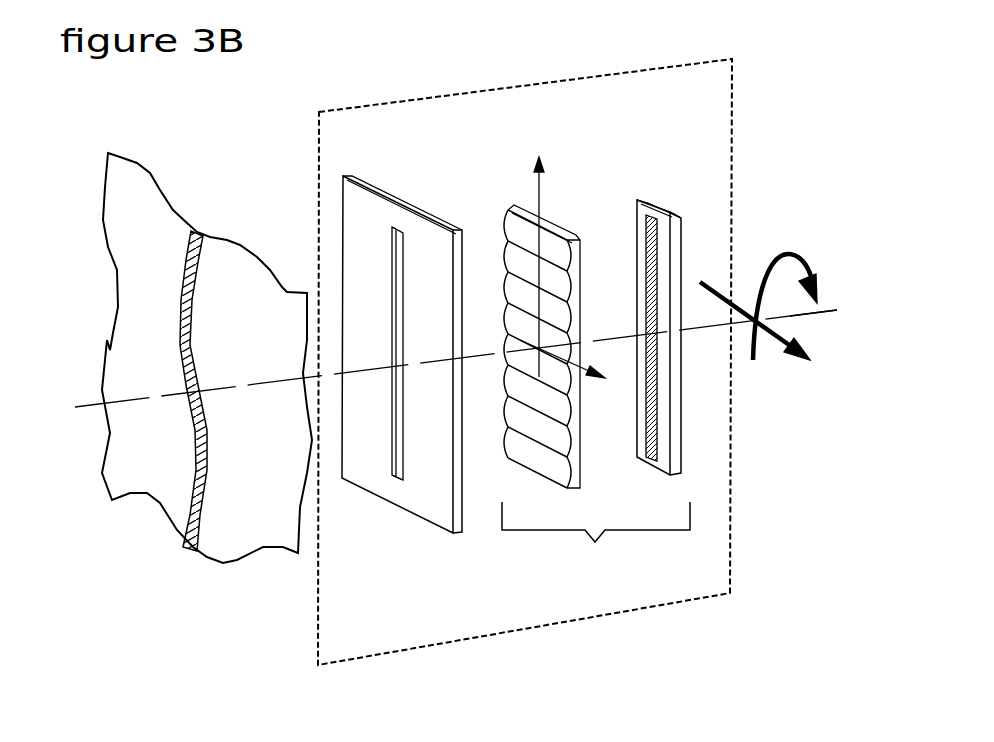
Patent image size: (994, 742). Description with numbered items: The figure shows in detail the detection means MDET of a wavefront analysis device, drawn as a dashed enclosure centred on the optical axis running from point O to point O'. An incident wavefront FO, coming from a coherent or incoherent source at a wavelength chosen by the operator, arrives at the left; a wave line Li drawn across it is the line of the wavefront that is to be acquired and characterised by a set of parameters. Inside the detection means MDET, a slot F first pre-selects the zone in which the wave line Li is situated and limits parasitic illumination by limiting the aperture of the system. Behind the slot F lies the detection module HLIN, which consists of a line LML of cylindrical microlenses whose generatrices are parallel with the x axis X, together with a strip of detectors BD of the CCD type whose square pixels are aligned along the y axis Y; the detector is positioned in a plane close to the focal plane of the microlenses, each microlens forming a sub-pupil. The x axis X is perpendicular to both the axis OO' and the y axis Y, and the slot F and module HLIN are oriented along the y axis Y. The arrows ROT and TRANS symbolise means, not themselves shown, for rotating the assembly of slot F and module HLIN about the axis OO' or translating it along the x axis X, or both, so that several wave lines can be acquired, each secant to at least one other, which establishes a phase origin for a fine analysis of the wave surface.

The incident wavefront FO is at (118, 176).
The wave line Li is at (200, 232).
The slot F is at (364, 182).
The line of cylindrical microlenses LML is at (575, 268).
The strip of detectors BD is at (655, 203).
The detection module HLIN is at (596, 535).
The detection means MDET is at (733, 202).
The rotation means ROT is at (790, 253).
The translation means TRANS is at (778, 348).
The optical axis origin O is at (451, 358).
The optical axis end point O' is at (817, 322).
The x axis X is at (564, 372).
The y axis Y is at (546, 265).